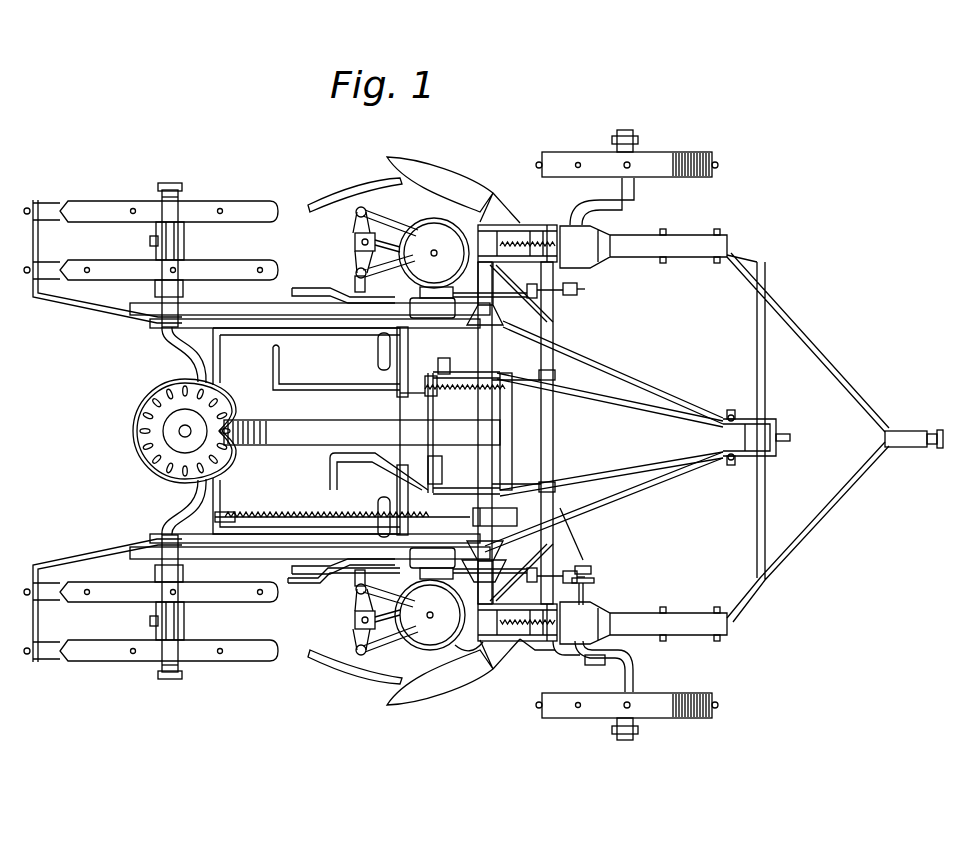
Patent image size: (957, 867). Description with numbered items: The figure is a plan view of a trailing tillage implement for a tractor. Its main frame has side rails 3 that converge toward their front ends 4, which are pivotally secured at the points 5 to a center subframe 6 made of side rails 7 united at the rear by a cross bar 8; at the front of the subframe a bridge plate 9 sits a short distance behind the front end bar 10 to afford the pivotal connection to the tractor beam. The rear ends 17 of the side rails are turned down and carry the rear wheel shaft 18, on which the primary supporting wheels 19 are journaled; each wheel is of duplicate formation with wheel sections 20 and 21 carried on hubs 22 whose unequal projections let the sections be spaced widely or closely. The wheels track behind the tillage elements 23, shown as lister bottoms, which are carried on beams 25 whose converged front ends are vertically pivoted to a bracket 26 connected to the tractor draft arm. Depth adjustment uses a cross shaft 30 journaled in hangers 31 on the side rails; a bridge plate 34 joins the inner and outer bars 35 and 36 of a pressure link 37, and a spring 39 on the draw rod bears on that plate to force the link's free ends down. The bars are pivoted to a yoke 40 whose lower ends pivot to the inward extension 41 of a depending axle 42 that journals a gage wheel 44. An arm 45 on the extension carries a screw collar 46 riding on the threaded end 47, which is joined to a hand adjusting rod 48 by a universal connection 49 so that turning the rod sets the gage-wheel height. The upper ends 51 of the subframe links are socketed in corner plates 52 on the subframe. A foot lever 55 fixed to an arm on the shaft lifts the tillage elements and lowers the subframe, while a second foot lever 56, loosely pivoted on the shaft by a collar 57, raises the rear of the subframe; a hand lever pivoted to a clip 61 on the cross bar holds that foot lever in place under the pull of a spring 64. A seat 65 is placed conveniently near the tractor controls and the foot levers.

The side rails 3 is at (318, 324).
The front ends 4 is at (633, 378).
The points (pivot bolts) 5 is at (728, 428).
The center subframe 6 is at (680, 414).
The side rails 7 is at (597, 395).
The cross bar 8 is at (434, 470).
The bridge plate 9 is at (745, 460).
The front end bar 10 is at (783, 441).
The rear ends 17 is at (165, 330).
The rear wheel shaft 18 is at (170, 183).
The primary supporting wheels 19 is at (240, 200).
The wheel section 20 is at (238, 262).
The wheel section 21 is at (195, 212).
The hubs 22 is at (150, 246).
The tillage elements 23 is at (428, 190).
The beams 25 is at (672, 236).
The bracket 26 is at (918, 448).
The cross shaft 30 is at (505, 452).
The hangers 31 is at (502, 566).
The bridge plate 34 is at (530, 651).
The inner bar 35 is at (578, 295).
The outer bar 36 is at (549, 224).
The pressure link 37 is at (468, 660).
The spring 39 is at (510, 238).
The yoke 40 is at (557, 652).
The inward extension 41 is at (616, 652).
The depending axle 42 is at (588, 665).
The gage wheel 44 is at (680, 719).
The arm 45 is at (590, 594).
The screw collar 46 is at (594, 580).
The threaded end 47 is at (591, 569).
The hand adjusting rod 48 is at (310, 586).
The universal connection 49 is at (566, 514).
The upper ends 51 is at (447, 372).
The corner plates 52 is at (425, 378).
The foot lever 55 is at (400, 470).
The foot lever 56 is at (312, 390).
The collar 57 is at (500, 373).
The clip 61 is at (400, 408).
The spring 64 is at (425, 392).
The seat 65 is at (133, 431).